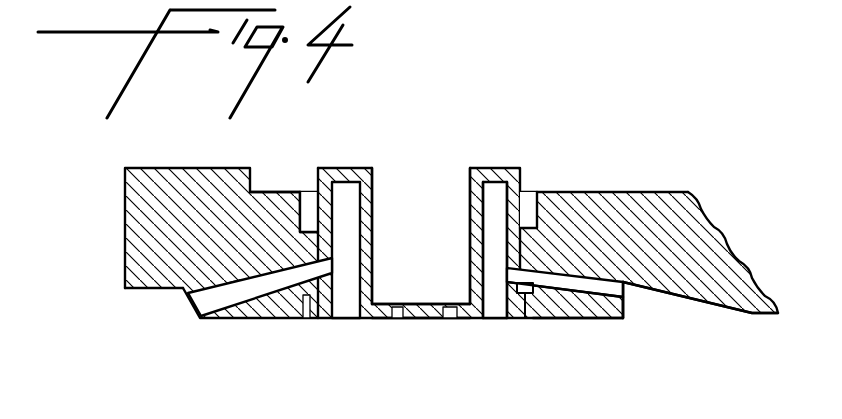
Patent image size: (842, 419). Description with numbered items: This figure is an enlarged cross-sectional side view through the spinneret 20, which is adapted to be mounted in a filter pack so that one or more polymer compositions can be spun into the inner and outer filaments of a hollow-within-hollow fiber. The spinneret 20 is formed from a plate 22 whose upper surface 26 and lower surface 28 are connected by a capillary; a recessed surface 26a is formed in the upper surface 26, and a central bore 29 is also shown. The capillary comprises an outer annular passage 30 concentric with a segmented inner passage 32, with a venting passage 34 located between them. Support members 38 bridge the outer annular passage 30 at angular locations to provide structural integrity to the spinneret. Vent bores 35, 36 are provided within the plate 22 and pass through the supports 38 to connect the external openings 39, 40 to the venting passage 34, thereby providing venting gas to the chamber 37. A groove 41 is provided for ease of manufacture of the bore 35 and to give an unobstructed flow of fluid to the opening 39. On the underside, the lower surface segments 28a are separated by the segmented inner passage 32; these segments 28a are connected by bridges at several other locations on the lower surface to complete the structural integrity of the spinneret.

The spinneret 20 is at (113, 192).
The plate 22 is at (125, 290).
The upper surface 26 is at (223, 168).
The recessed surface 26a is at (285, 192).
The lower surface 28 is at (205, 318).
The lower surface segments 28a is at (433, 319).
The central bore 29 is at (428, 225).
The outer annular passage 30 is at (528, 318).
The segmented inner passage 32 is at (397, 318).
The venting passage 34 is at (495, 308).
The vent bore 35 is at (598, 288).
The vent bore 36 is at (233, 292).
The chamber 37 is at (498, 177).
The support members 38 is at (546, 228).
The external opening 39 is at (632, 297).
The external opening 40 is at (170, 289).
The groove 41 is at (710, 307).